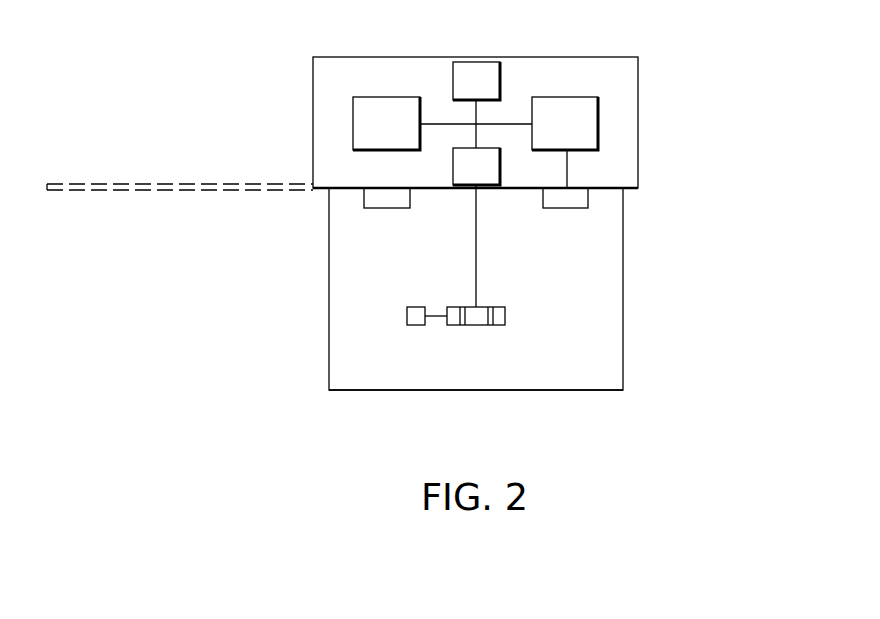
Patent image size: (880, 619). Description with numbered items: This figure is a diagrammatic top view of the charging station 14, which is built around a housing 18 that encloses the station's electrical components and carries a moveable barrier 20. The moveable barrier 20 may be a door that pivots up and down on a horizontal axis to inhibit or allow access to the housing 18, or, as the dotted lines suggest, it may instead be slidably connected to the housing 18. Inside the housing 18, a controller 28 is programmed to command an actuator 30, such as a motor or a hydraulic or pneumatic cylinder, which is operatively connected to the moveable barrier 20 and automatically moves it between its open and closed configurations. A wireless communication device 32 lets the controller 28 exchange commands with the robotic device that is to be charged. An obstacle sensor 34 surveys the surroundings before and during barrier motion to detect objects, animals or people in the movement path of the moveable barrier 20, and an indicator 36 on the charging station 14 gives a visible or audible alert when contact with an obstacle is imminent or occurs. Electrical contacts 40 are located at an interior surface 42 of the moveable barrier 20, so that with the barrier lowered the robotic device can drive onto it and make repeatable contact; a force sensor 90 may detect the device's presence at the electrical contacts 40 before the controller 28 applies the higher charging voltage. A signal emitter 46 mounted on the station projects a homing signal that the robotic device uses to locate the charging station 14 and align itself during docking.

The charging station 14 is at (754, 31).
The housing 18 is at (527, 57).
The moveable barrier 20 is at (146, 182).
The controller 28 is at (380, 105).
The actuator 30 is at (572, 105).
The wireless communication device 32 is at (487, 178).
The obstacle sensor 34 is at (475, 68).
The indicator 36 is at (364, 201).
The electrical contacts 40 is at (500, 314).
The interior surface 42 is at (580, 352).
The signal emitter 46 is at (588, 198).
The force sensor 90 is at (415, 306).